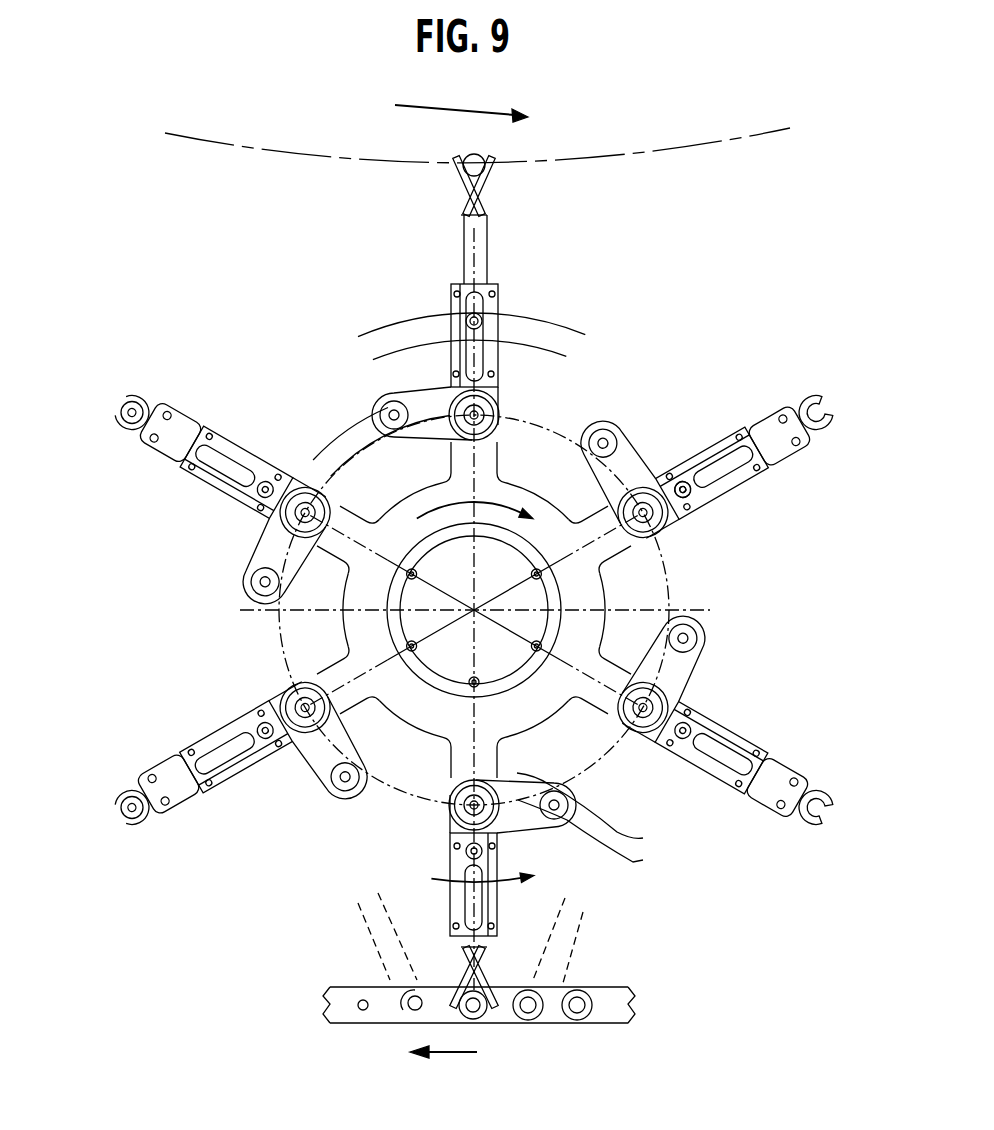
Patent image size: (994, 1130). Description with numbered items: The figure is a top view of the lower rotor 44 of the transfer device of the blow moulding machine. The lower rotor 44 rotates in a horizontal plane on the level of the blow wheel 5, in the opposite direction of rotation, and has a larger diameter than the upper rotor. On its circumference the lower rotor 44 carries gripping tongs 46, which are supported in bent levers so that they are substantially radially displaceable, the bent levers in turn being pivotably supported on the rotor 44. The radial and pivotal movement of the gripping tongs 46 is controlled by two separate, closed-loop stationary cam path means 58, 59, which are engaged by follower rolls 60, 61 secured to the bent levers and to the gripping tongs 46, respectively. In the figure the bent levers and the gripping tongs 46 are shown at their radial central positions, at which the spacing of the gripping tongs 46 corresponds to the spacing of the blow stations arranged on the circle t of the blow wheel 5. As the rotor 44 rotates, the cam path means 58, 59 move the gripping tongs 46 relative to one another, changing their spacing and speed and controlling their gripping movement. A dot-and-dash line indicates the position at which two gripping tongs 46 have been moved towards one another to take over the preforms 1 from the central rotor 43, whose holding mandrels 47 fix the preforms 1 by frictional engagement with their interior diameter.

The preform 1 is at (135, 408).
The blow wheel 5 is at (638, 838).
The central rotor 43 is at (623, 1002).
The lower rotor 44 is at (592, 592).
The gripping tongs 46 is at (818, 812).
The holding mandrel 47 is at (410, 1012).
The cam path means 58 is at (403, 328).
The cam path means 59 is at (345, 430).
The follower roll 60 is at (685, 487).
The follower roll 61 is at (610, 430).
The circle of the blow wheel t is at (763, 132).